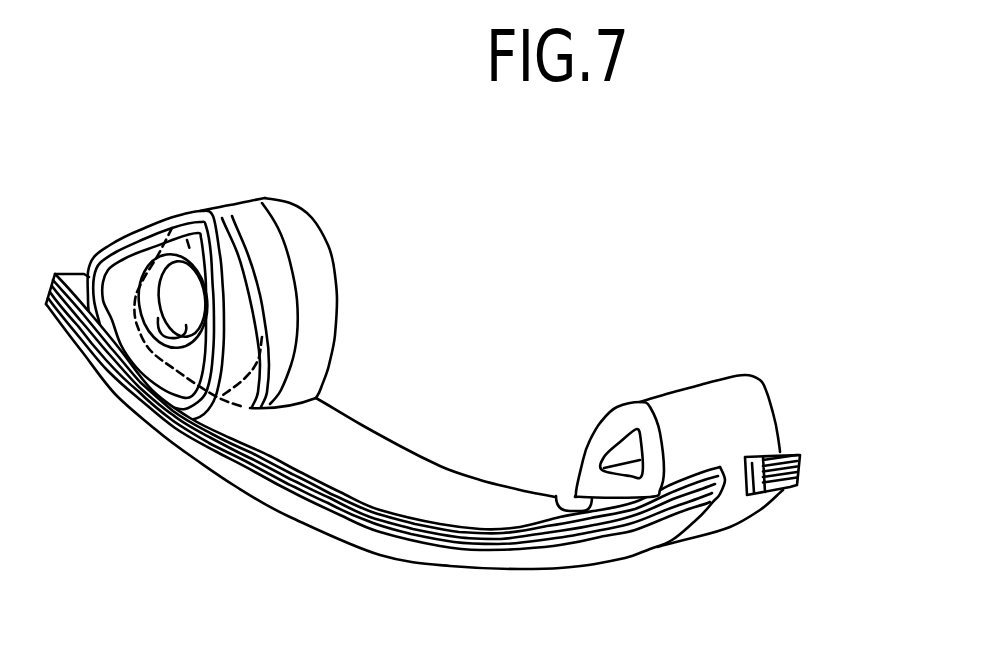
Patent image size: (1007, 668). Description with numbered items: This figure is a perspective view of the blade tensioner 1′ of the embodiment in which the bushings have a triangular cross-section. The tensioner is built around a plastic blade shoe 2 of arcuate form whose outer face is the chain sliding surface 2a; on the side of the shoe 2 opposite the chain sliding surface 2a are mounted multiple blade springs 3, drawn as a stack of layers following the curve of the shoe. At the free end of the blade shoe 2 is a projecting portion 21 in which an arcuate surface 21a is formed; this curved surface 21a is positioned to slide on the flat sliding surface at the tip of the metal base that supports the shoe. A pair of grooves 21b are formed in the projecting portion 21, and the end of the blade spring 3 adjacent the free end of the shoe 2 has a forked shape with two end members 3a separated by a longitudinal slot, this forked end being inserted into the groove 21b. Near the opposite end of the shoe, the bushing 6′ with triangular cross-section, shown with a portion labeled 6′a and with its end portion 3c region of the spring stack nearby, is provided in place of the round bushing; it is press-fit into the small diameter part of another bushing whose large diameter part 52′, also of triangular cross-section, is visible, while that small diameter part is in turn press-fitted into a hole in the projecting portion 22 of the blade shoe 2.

The blade tensioner 1′ is at (533, 253).
The blade shoe 2 is at (427, 567).
The chain sliding surface 2a is at (285, 519).
The blade spring 3 is at (410, 450).
The end members 3a is at (800, 455).
The webbing end portion 3c is at (70, 277).
The bushing 6′ is at (200, 212).
The pin of buckle 6′a is at (140, 362).
The projecting portion 21 is at (760, 404).
The arcuate surface 21a is at (606, 420).
The grooves 21b is at (557, 496).
The projecting portion 22 is at (253, 223).
The large diameter part 52′ is at (317, 233).